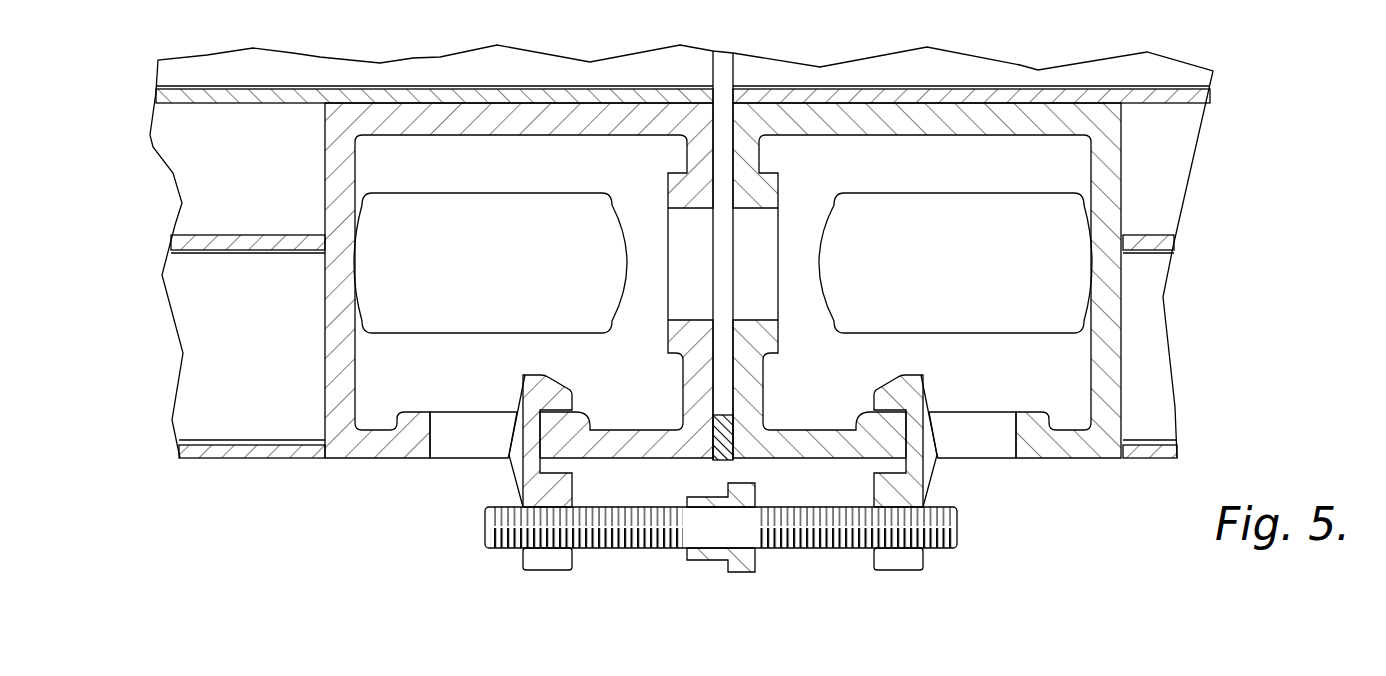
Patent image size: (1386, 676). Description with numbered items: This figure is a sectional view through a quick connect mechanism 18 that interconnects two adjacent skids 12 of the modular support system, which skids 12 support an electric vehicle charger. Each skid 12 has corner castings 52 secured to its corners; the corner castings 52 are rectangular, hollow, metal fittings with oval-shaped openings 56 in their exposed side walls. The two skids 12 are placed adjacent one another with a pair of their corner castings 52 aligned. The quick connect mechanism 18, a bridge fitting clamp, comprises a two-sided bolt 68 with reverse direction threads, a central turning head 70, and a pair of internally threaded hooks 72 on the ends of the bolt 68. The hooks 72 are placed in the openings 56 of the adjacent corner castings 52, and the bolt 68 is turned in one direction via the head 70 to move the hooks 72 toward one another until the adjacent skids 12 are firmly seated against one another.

The skid 12 is at (120, 103).
The quick connect mechanism 18 is at (731, 508).
The corner casting 52 is at (368, 437).
The oval-shaped opening 56 is at (460, 449).
The two-sided bolt 68 is at (822, 548).
The central turning head 70 is at (742, 572).
The internally threaded hook 72 is at (530, 562).